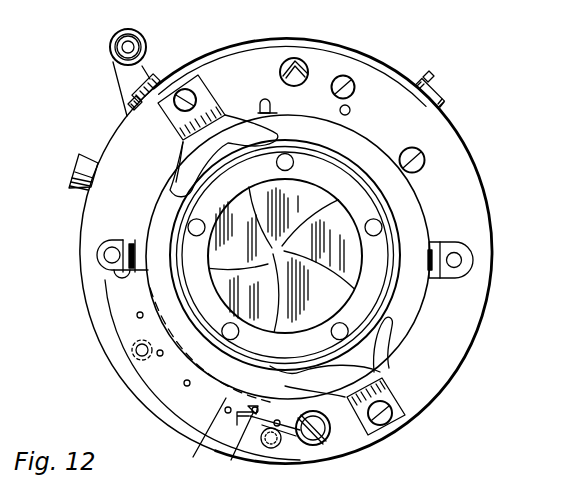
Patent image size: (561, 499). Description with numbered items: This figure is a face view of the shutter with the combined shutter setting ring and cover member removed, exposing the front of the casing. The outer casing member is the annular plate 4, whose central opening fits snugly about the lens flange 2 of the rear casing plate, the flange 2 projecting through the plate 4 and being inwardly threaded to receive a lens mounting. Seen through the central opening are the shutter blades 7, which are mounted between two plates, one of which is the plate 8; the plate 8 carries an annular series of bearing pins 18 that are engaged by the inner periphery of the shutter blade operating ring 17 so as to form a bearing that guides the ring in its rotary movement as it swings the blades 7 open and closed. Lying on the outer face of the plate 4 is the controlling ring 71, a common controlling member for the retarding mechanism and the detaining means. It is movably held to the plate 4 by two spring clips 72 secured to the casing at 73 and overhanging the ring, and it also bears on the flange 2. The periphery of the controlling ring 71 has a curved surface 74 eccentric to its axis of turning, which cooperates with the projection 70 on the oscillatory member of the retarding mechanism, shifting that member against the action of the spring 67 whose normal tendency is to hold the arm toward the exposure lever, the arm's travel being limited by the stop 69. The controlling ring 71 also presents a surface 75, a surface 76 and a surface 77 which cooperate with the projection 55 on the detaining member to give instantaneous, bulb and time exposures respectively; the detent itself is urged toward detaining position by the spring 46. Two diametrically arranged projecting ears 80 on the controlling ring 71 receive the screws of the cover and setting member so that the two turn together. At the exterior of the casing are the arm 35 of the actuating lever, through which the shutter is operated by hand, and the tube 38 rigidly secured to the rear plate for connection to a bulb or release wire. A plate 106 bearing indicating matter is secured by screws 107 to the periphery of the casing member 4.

The flange 2 is at (395, 220).
The annular plate 4 is at (464, 178).
The shutter blades 7 is at (267, 307).
The plate 8 is at (368, 293).
The shutter blade operating ring 17 is at (378, 306).
The bearing pins 18 is at (338, 338).
The arm 35 is at (120, 72).
The tube 38 is at (78, 163).
The spring 46 is at (305, 65).
The projection 55 is at (273, 113).
The spring 67 is at (278, 449).
The stop 69 is at (328, 438).
The projection 70 is at (239, 449).
The controlling ring 71 is at (380, 157).
The spring clips 72 is at (217, 110).
The securing points 73 is at (184, 89).
The curved surface 74 is at (201, 439).
The surface 75 is at (248, 90).
The surface 76 is at (183, 142).
The surface 77 is at (179, 162).
The projecting ears 80 is at (106, 234).
The plate 106 is at (388, 57).
The screws 107 is at (433, 86).